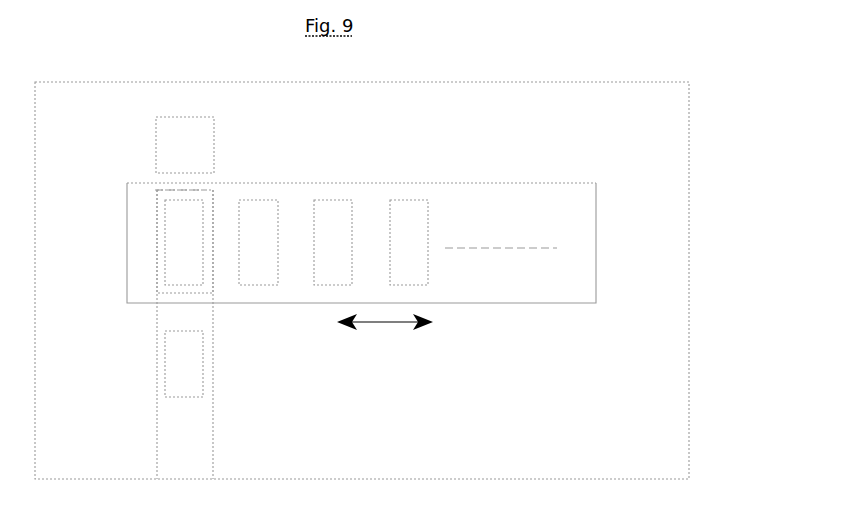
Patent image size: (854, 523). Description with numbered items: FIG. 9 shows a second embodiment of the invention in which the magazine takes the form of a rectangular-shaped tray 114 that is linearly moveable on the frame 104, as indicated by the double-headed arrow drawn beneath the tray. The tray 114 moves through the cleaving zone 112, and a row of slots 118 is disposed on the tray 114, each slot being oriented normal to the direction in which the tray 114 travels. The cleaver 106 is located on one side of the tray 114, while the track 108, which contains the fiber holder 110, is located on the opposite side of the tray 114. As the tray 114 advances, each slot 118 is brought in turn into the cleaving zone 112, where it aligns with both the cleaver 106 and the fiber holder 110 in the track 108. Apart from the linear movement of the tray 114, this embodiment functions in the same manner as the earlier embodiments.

The frame 104 is at (409, 280).
The cleaver 106 is at (202, 146).
The track 108 is at (230, 334).
The fiber holder 110 is at (144, 366).
The cleaving zone 112 is at (130, 241).
The rectangular-shaped tray 114 is at (361, 214).
The slots 118 is at (197, 202).